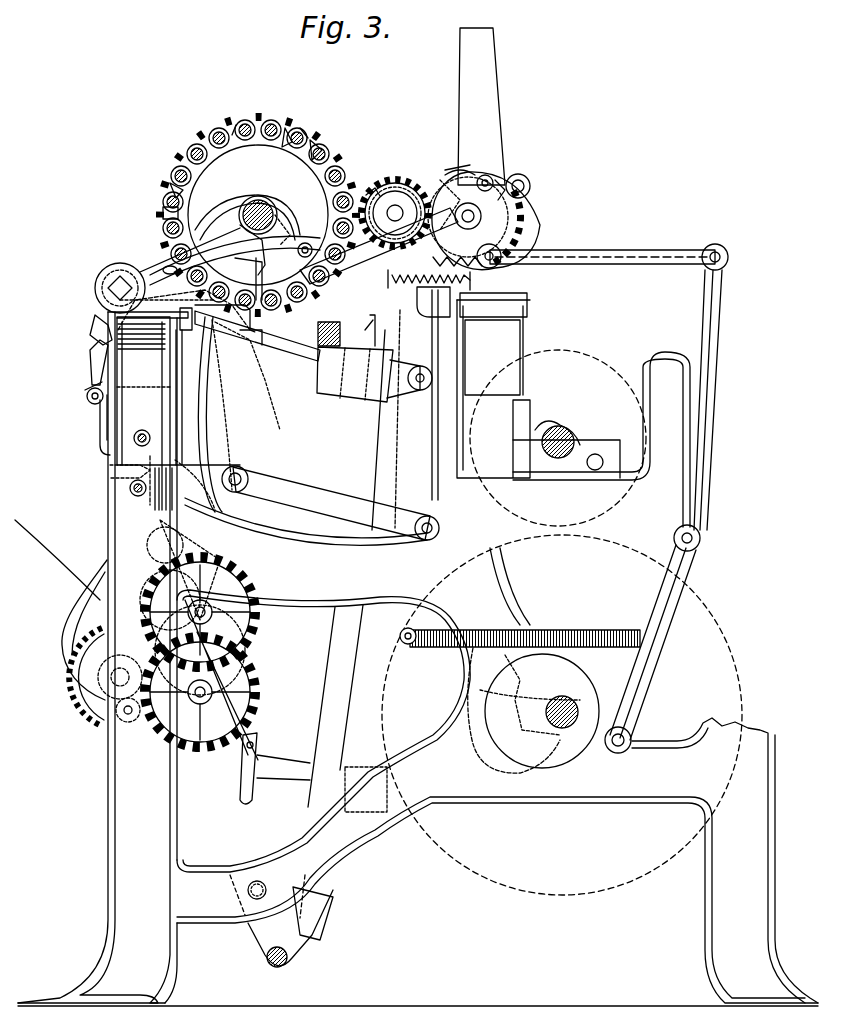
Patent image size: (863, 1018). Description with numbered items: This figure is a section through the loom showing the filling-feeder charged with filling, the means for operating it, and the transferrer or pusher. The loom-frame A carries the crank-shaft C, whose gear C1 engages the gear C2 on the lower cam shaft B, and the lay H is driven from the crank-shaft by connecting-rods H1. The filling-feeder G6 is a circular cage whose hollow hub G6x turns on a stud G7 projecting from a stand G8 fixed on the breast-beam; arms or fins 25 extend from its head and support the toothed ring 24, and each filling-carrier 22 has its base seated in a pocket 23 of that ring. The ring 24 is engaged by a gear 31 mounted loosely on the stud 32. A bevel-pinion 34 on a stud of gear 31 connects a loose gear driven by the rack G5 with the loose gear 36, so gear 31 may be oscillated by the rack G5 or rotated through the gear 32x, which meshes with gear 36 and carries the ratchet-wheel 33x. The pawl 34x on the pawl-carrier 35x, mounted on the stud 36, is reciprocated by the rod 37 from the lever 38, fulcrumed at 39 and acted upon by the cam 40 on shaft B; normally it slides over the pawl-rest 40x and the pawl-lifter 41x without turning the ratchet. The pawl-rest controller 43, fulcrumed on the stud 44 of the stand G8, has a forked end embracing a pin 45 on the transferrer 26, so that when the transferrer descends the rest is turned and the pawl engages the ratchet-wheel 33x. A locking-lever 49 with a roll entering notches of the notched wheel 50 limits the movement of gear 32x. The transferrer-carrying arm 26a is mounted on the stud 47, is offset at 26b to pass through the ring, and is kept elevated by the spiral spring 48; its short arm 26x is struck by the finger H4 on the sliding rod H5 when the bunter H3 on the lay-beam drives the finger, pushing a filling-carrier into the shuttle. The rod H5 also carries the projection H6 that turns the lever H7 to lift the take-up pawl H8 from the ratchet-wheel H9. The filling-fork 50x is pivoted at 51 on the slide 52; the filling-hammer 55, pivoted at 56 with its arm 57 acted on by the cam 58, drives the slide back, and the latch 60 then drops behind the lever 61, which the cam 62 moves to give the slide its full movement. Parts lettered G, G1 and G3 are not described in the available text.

The loom-frame A is at (107, 793).
The lower cam shaft B is at (560, 730).
The crank-shaft C is at (562, 428).
The gear C1 is at (722, 626).
The gear C2 is at (574, 357).
The gear train G is at (118, 488).
The pivot G1 is at (236, 477).
The link G3 is at (285, 486).
The rack G5 is at (430, 450).
The filling-feeder G6 is at (240, 158).
The hollow hub G6x is at (278, 218).
The stud G7 is at (268, 205).
The stand G8 is at (218, 212).
The lay H is at (322, 395).
The connecting-rods H1 is at (468, 362).
The bunter H3 is at (290, 356).
The finger H4 is at (96, 360).
The sliding rod H5 is at (86, 398).
The projection H6 is at (98, 440).
The lever H7 is at (120, 468).
The take-up pawl H8 is at (85, 593).
The ratchet-wheel H9 is at (78, 688).
The filling-carrier 22 is at (318, 148).
The pocket 23 is at (293, 135).
The toothed ring 24 is at (176, 187).
The arms or fins 25 is at (230, 128).
The transferrer 26 is at (280, 266).
The transferrer-carrying arm 26a is at (240, 262).
The offset 26b is at (250, 250).
The short arm 26x is at (90, 320).
The gear 31 is at (350, 268).
The stud 32 is at (397, 205).
The gear 32x is at (500, 175).
The ratchet-wheel 33x is at (505, 205).
The bevel-pinion 34 is at (372, 200).
The pawl 34x is at (450, 170).
The pawl-carrier 35x is at (500, 185).
The gear 36 is at (390, 205).
The rod 37 is at (600, 258).
The lever 38 is at (720, 358).
The fulcrum 39 is at (676, 539).
The cam 40 is at (605, 758).
The pawl-rest 40x is at (445, 180).
The pawl-lifter 41x is at (462, 175).
The pawl-rest controller 43 is at (378, 268).
The stud 44 is at (310, 244).
The pin 45 is at (165, 266).
The stud 47 is at (112, 283).
The spiral spring 48 is at (150, 266).
The locking-lever 49 is at (522, 227).
The notched wheel 50 is at (518, 185).
The filling-fork 50x is at (258, 335).
The pivot 51 is at (240, 340).
The filling-fork slide 52 is at (242, 328).
The filling-hammer 55 is at (200, 412).
The pivot 56 is at (96, 338).
The arm 57 is at (540, 615).
The cam 58 is at (612, 690).
The latch 60 is at (210, 302).
The lever 61 is at (205, 323).
The cam 62 is at (476, 748).